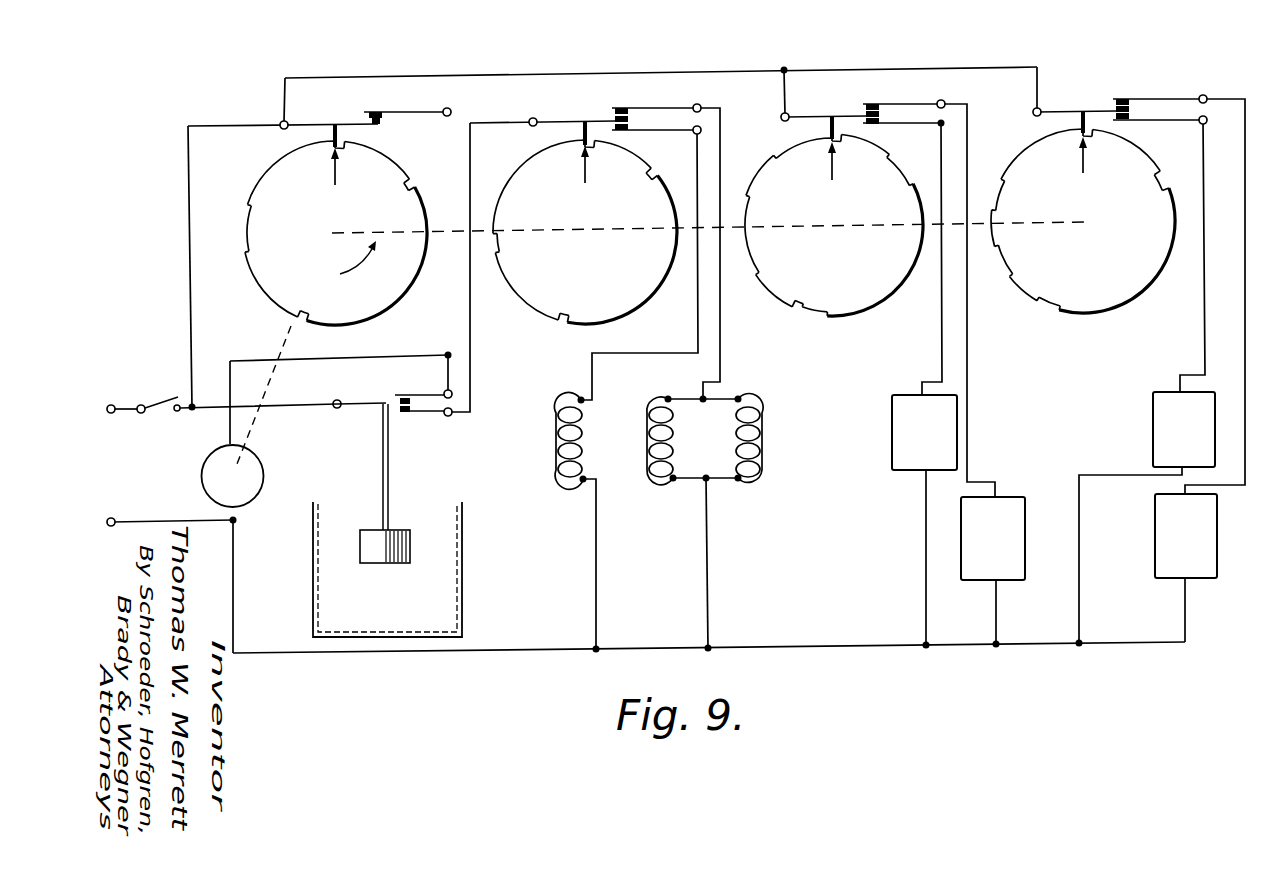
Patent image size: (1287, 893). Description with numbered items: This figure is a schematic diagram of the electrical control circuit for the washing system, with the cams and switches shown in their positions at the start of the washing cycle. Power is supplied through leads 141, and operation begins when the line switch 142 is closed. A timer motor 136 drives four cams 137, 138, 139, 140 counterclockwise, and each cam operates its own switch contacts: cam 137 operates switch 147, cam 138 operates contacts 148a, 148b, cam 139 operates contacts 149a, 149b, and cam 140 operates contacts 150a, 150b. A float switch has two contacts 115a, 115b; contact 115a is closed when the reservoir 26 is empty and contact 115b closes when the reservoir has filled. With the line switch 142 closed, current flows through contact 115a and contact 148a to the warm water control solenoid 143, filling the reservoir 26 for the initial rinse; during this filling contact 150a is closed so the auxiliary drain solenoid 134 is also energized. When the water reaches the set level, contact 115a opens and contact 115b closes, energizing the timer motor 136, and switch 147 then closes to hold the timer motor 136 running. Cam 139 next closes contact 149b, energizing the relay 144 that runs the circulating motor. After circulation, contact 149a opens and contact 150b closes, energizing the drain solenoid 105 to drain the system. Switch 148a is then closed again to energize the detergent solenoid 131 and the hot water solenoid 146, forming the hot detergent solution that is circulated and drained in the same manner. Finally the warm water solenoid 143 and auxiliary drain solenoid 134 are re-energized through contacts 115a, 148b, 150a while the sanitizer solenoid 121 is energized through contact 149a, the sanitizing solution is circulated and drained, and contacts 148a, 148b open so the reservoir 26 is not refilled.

The reservoir 26 is at (462, 568).
The drain solenoid 105 is at (1165, 444).
The float switch contact 115a is at (413, 414).
The float switch contact 115b is at (415, 394).
The sanitizer solenoid 121 is at (1010, 500).
The detergent solenoid 131 is at (648, 445).
The auxiliary drain solenoid 134 is at (1210, 568).
The timer motor 136 is at (263, 485).
The cam 137 is at (362, 308).
The cam 138 is at (636, 310).
The cam 139 is at (866, 294).
The cam 140 is at (1126, 284).
The leads 141 is at (117, 413).
The line switch 142 is at (176, 398).
The warm water control solenoid 143 is at (567, 485).
The relay 144 is at (893, 437).
The hot water solenoid 146 is at (762, 412).
The switch 147 is at (373, 111).
The switch contact 148a is at (637, 110).
The switch contact 148b is at (660, 119).
The switch contact 149a is at (893, 104).
The switch contact 149b is at (892, 124).
The switch contact 150a is at (1134, 97).
The switch contact 150b is at (1143, 120).